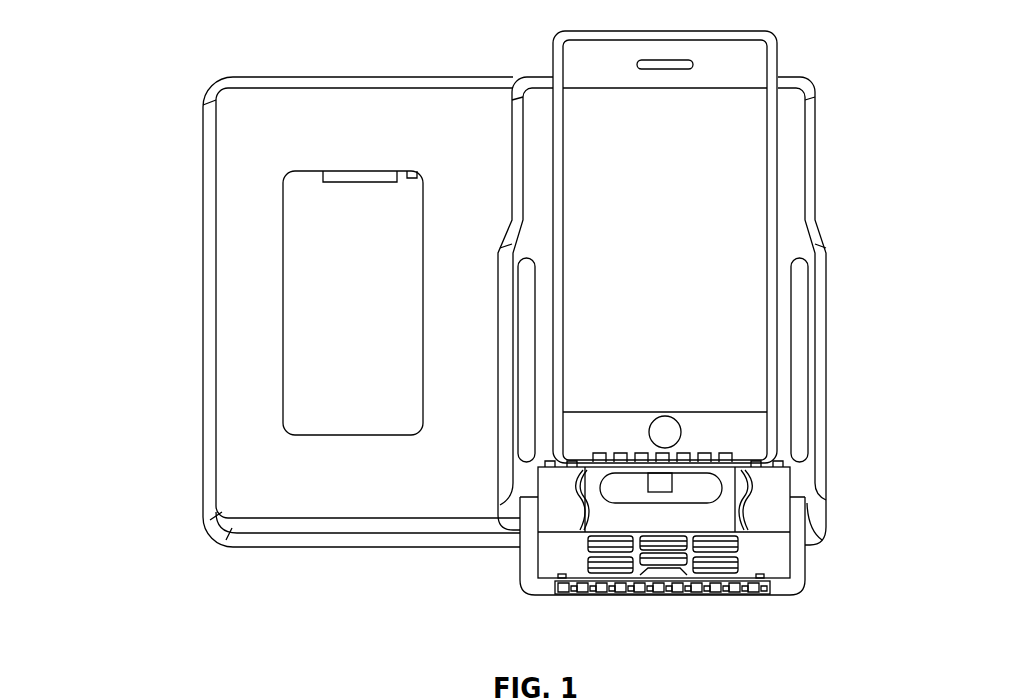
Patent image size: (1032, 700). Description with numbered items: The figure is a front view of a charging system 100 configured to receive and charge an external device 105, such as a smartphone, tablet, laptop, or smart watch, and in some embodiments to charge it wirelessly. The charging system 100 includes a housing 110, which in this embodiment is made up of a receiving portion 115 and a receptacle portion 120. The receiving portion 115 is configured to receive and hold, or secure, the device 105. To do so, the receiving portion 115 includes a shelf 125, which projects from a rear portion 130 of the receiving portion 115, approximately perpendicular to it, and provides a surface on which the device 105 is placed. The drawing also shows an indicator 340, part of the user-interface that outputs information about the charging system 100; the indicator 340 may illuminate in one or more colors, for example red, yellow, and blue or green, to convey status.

The charging system 100 is at (118, 42).
The external device 105 is at (737, 31).
The housing 110 is at (790, 78).
The receiving portion 115 is at (832, 169).
The receptacle portion 120 is at (184, 302).
The shelf 125 is at (629, 554).
The rear portion 130 is at (831, 407).
The indicator 340 is at (660, 492).